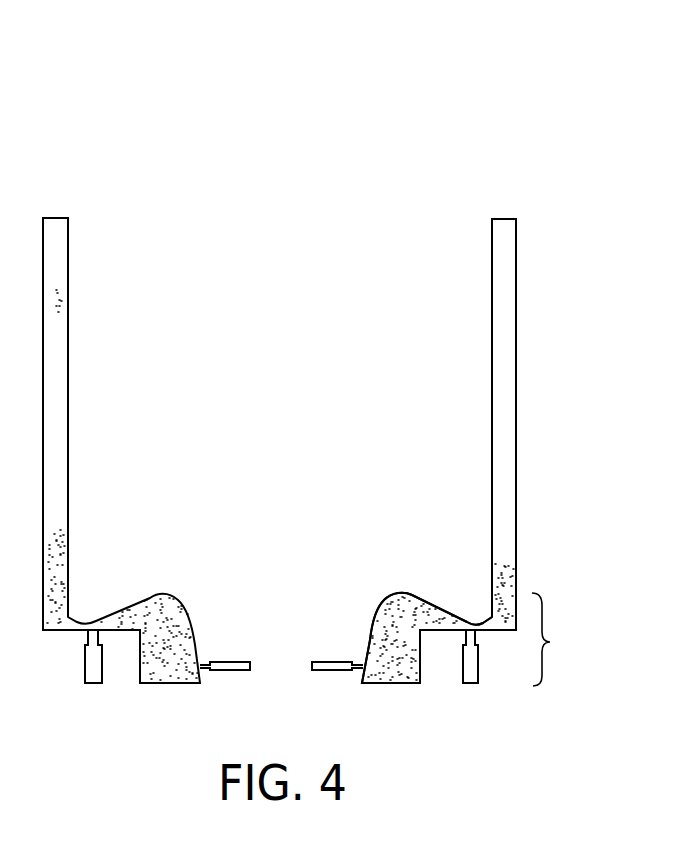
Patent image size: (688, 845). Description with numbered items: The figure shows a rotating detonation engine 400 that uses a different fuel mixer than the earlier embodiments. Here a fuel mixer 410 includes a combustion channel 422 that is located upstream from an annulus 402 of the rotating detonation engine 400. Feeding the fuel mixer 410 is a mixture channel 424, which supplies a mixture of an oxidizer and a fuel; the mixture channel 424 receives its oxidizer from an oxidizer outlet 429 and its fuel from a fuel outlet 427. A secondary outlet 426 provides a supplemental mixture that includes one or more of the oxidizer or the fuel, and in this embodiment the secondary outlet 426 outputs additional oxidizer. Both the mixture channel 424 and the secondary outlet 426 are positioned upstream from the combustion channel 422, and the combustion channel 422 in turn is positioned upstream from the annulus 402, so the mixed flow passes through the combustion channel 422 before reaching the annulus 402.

The rotating detonation engine 400 is at (275, 48).
The annulus 402 is at (517, 316).
The fuel mixer 410 is at (550, 642).
The combustion channel 422 is at (487, 631).
The mixture channel 424 is at (382, 622).
The secondary outlet 426 is at (462, 637).
The fuel outlet 427 is at (330, 671).
The oxidizer outlet 429 is at (389, 684).